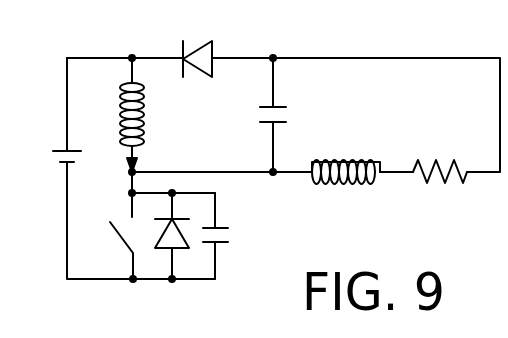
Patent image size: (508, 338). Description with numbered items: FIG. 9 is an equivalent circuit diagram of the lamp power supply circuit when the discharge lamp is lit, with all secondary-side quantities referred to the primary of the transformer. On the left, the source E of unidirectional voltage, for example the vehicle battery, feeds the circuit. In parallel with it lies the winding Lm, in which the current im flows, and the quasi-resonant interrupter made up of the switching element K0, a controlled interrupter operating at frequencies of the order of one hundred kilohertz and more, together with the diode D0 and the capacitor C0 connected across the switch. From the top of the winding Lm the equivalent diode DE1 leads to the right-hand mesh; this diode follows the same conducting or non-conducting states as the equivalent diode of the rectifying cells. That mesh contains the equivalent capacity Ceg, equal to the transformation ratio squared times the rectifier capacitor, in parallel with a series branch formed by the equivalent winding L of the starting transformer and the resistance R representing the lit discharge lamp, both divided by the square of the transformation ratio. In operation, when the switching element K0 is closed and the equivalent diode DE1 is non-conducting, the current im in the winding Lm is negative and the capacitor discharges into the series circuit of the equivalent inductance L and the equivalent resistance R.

The equivalent diode DE1 is at (199, 41).
The winding Lm is at (111, 108).
The current im is at (114, 165).
The source of unidirectional voltage E is at (55, 157).
The equivalent capacity Ceg is at (343, 115).
The equivalent winding L is at (347, 192).
The resistance R is at (441, 192).
The switching element K0 is at (112, 250).
The diode D0 is at (163, 236).
The capacitor C0 is at (235, 236).